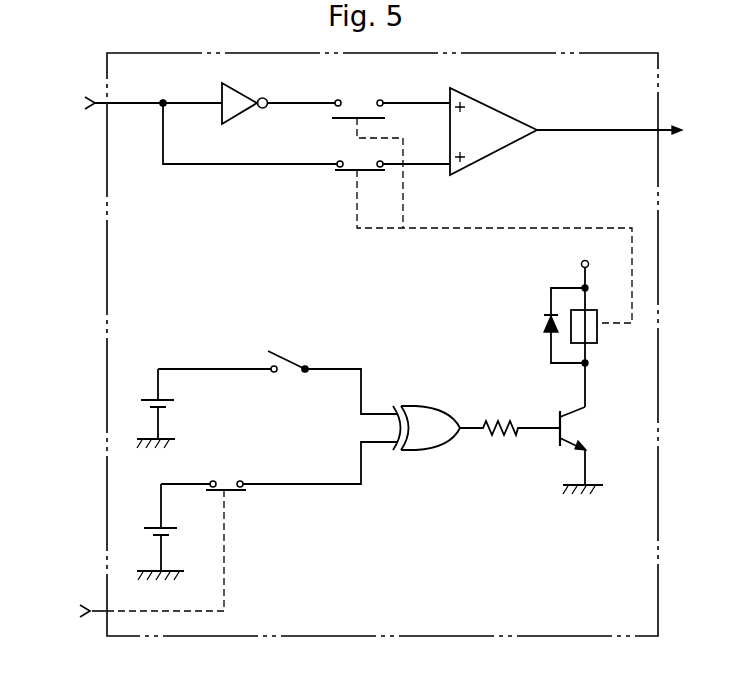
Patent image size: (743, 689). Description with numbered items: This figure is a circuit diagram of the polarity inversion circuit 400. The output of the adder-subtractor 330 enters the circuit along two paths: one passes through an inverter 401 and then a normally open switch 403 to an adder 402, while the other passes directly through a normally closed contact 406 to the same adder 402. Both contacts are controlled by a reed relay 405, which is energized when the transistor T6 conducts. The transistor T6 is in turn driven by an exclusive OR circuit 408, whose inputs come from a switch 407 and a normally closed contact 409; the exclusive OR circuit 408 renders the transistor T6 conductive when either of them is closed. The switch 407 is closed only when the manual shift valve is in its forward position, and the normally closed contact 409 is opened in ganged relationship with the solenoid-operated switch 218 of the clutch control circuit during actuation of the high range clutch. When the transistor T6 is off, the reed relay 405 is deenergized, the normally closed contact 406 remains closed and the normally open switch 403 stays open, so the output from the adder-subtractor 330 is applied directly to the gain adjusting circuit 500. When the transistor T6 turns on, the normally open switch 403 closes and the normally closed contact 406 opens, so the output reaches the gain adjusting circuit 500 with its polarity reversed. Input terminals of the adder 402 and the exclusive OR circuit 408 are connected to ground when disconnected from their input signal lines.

The polarity inversion circuit 400 is at (106, 340).
The inverter 401 is at (237, 100).
The adder 402 is at (502, 117).
The normally open switch 403 is at (362, 103).
The reed relay 405 is at (590, 333).
The normally closed contact 406 is at (347, 172).
The switch 407 is at (298, 364).
The exclusive OR circuit 408 is at (437, 418).
The normally closed contact 409 is at (233, 492).
The solenoid-operated switch 218 is at (135, 612).
The adder-subtractor 330 is at (124, 101).
The gain adjusting circuit 500 is at (631, 129).
The transistor T6 is at (572, 425).